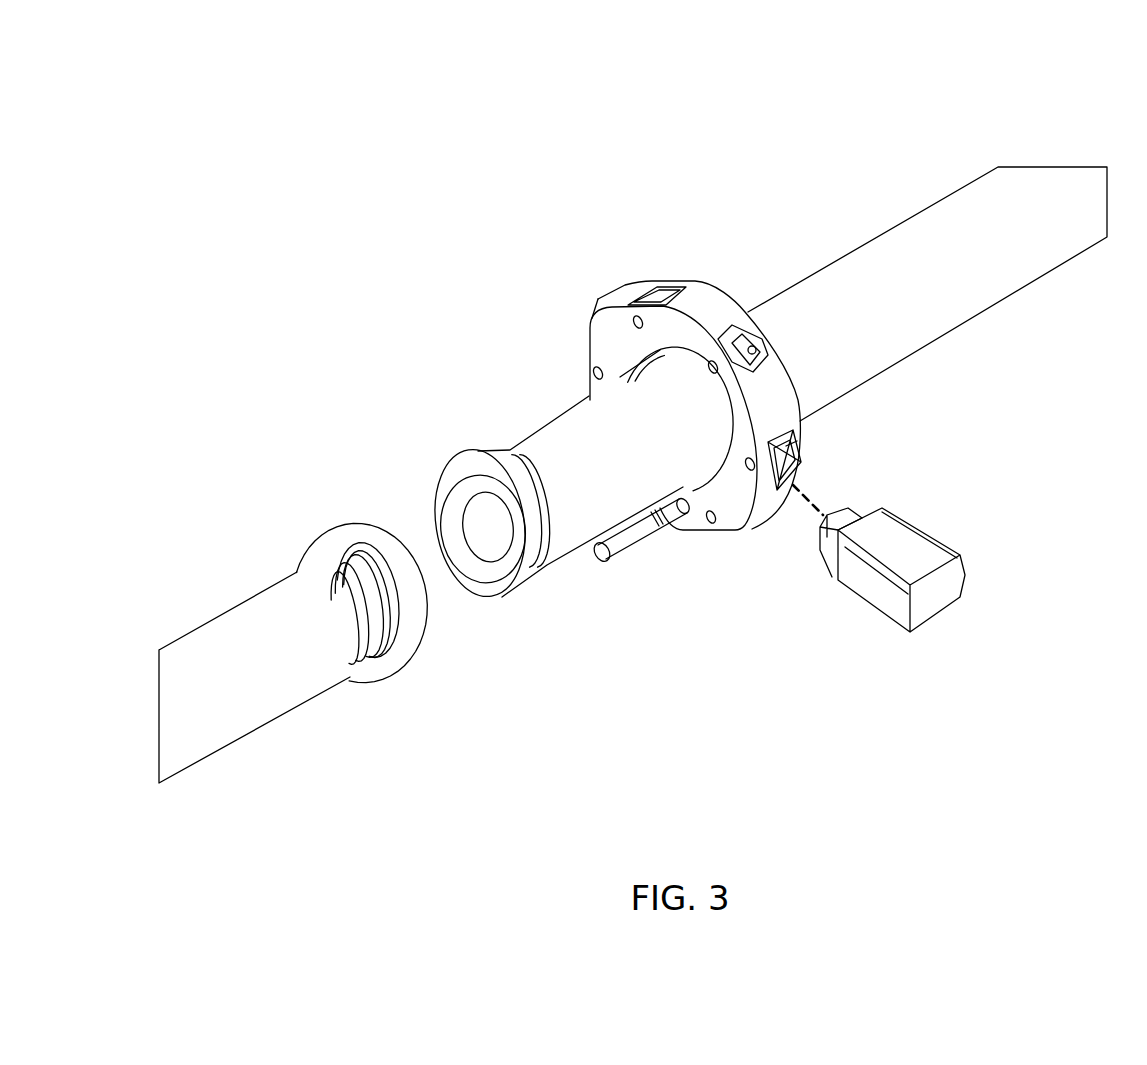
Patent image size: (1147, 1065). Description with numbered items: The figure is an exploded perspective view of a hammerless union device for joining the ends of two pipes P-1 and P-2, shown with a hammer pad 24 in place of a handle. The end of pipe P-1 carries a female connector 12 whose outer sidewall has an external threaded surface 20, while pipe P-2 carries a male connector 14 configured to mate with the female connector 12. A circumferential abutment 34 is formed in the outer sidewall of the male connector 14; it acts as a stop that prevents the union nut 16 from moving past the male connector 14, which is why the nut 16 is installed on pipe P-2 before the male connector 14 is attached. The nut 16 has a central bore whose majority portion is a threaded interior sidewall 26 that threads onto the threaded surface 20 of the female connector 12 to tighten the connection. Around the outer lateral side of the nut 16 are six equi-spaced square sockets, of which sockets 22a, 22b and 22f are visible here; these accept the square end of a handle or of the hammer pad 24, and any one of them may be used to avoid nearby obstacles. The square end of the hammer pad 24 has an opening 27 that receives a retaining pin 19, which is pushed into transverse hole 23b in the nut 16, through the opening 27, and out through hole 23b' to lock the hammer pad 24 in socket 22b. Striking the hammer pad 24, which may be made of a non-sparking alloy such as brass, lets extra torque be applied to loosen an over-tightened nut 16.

The pipe P-1 is at (275, 583).
The pipe P-2 is at (848, 252).
The female connector 12 is at (402, 670).
The male connector 14 is at (447, 465).
The union nut 16 is at (597, 317).
The retaining pin 19 is at (637, 542).
The threaded surface 20 is at (412, 603).
The socket 22a is at (765, 340).
The socket 22b is at (800, 453).
The socket 22f is at (661, 283).
The hole 23b is at (740, 556).
The hole 23b' is at (864, 414).
The hammer pad 24 is at (935, 620).
The threaded interior sidewall 26 is at (718, 483).
The opening 27 is at (830, 547).
The circumferential abutment 34 is at (540, 568).